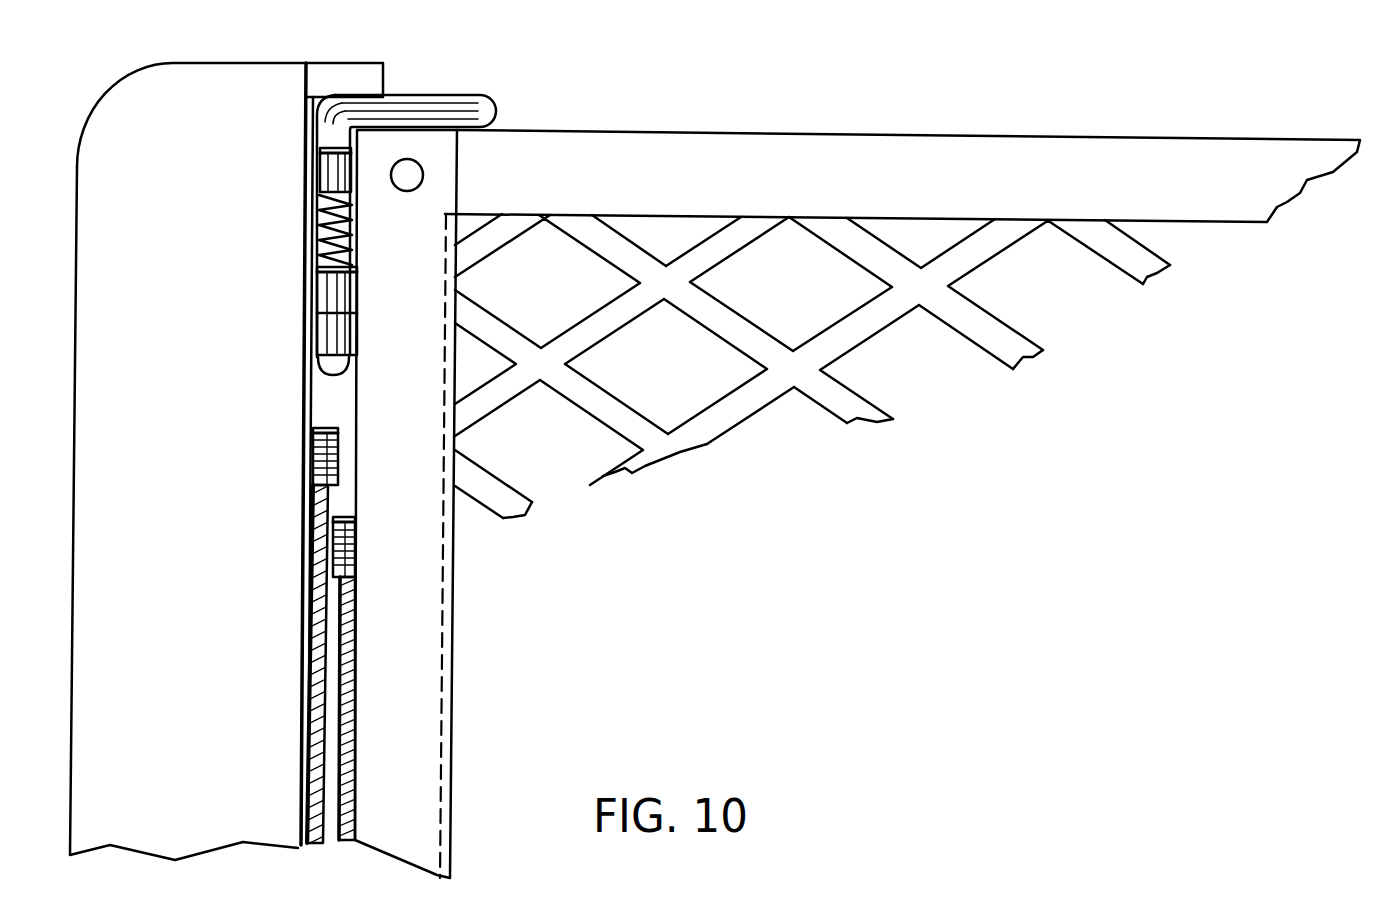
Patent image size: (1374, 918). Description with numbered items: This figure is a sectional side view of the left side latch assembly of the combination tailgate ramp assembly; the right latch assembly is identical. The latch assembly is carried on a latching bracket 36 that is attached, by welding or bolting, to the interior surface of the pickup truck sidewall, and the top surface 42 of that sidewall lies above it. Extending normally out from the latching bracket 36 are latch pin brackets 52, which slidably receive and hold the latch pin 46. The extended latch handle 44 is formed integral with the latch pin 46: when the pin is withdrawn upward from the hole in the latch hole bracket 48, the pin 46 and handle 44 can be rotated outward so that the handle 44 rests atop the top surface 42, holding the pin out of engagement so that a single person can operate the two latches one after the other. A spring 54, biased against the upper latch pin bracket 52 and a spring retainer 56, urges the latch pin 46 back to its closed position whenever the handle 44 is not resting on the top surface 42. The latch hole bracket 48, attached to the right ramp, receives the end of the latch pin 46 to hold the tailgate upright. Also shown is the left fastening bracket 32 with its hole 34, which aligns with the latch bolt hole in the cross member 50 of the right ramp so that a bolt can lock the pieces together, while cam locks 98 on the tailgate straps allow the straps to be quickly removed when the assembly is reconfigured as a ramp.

The top surface of pickup truck sidewall 42 is at (243, 63).
The latch handle 44 is at (437, 95).
The hole 34 is at (417, 165).
The spring 54 is at (315, 200).
The latch pin brackets 52 is at (352, 182).
The spring retainer 56 is at (318, 268).
The latch hole bracket 48 is at (353, 330).
The latch pin 46 is at (332, 368).
The latching bracket 36 is at (308, 393).
The cam locks 98 is at (335, 517).
The cross member 50 is at (443, 570).
The left fastening bracket 32 is at (430, 653).